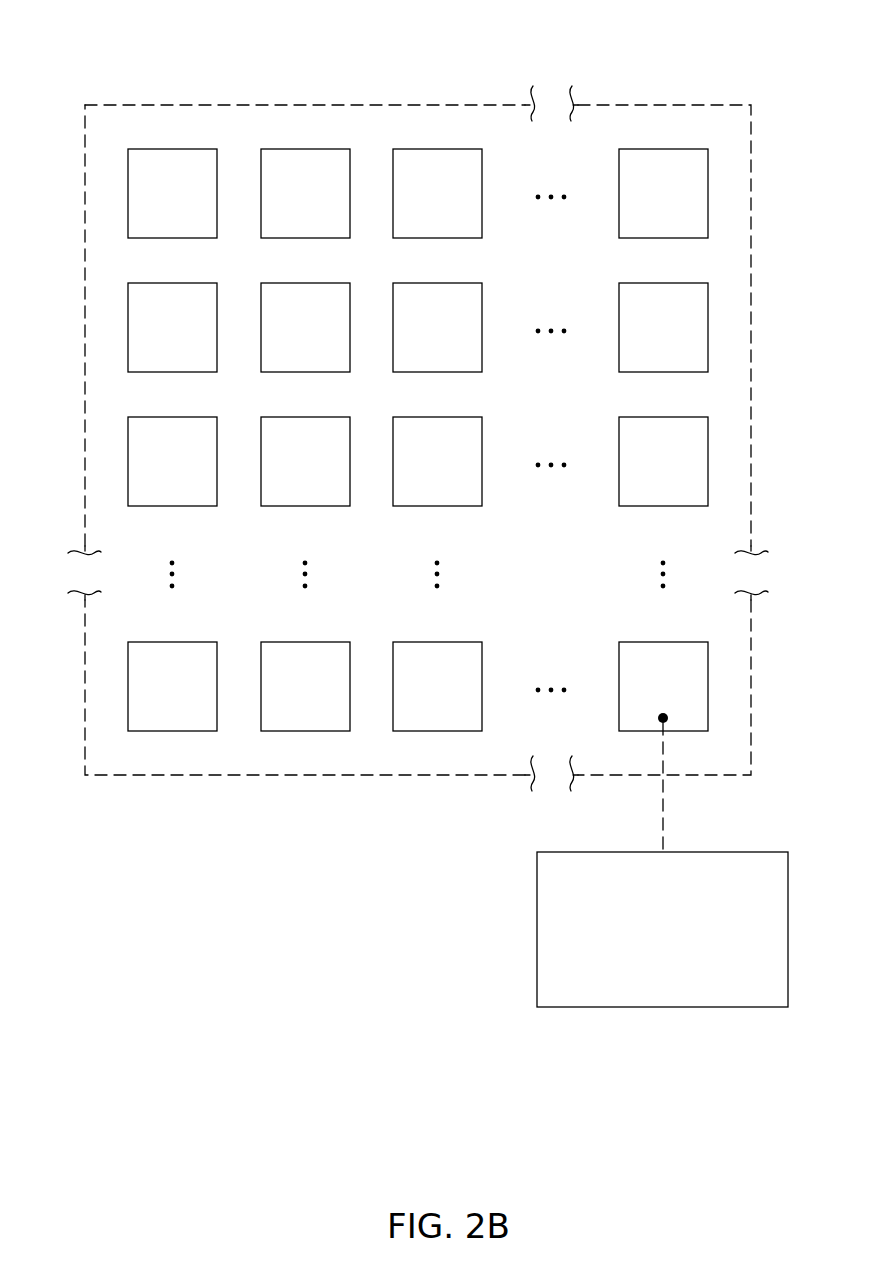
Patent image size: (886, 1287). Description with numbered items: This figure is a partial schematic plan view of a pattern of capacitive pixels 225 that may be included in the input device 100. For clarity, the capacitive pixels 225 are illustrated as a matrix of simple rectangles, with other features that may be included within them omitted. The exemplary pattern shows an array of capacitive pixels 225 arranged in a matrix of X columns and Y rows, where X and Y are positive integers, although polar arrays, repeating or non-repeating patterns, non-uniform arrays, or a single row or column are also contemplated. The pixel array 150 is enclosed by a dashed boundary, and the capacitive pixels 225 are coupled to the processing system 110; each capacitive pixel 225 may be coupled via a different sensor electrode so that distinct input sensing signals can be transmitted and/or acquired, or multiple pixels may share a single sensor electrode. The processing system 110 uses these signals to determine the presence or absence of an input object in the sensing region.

The input device 100 is at (163, 75).
The detector array 150 is at (232, 133).
The capacitive pixels 225 is at (204, 209).
The processing system 110 is at (644, 976).